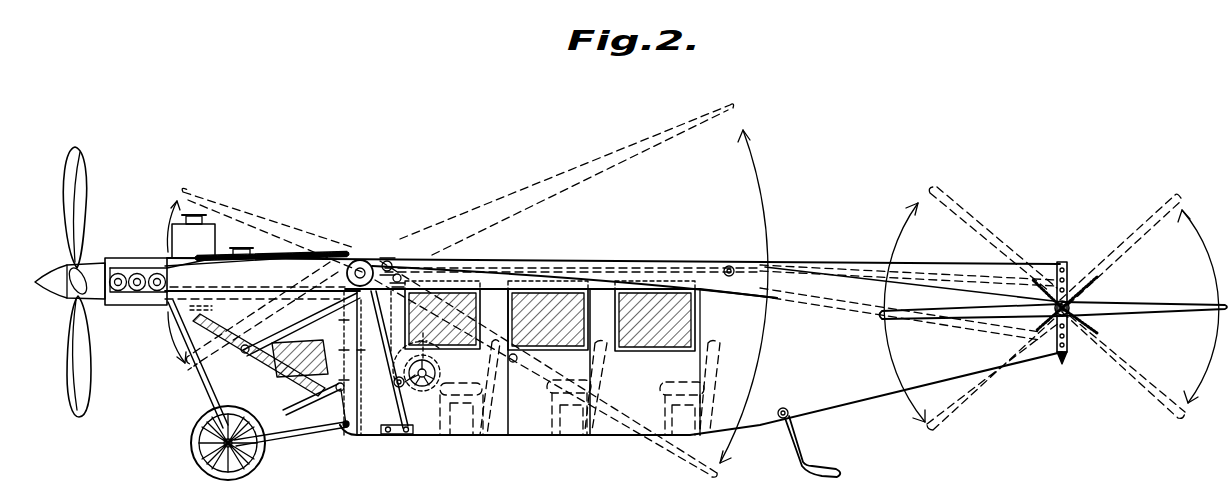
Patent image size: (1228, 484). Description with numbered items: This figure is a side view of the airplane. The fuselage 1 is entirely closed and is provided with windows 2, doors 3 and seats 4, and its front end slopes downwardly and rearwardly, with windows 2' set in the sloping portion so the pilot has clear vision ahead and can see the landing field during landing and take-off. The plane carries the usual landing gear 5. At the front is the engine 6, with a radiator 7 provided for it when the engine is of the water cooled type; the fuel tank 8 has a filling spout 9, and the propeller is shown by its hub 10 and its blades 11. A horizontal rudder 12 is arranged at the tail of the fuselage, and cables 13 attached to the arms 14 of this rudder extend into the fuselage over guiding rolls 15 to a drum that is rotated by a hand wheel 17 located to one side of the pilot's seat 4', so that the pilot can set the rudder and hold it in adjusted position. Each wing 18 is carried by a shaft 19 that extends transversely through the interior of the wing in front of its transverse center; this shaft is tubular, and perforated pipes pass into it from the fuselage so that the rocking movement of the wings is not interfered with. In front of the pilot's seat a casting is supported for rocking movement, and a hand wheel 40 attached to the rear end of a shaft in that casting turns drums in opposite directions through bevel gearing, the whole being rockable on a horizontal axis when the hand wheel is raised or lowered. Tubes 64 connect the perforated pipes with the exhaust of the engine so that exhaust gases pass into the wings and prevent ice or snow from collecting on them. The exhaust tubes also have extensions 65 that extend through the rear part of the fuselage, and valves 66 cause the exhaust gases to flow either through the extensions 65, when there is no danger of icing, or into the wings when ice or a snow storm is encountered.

The fuselage 1 is at (502, 423).
The windows 2 is at (550, 329).
The windows 2' is at (275, 370).
The doors 3 is at (545, 413).
The seats 4 is at (633, 388).
The pilot's seat 4' is at (470, 387).
The landing gear 5 is at (218, 399).
The engine 6 is at (143, 290).
The radiator 7 is at (180, 237).
The fuel tank 8 is at (313, 252).
The filling spout 9 is at (242, 248).
The propeller hub 10 is at (92, 268).
The propeller blades 11 is at (80, 328).
The horizontal rudder 12 is at (1147, 304).
The cables 13 is at (944, 265).
The arms 14 is at (1088, 250).
The guiding rolls 15 is at (398, 272).
The hand wheel 17 is at (406, 435).
The wing 18 is at (495, 272).
The shaft 19 is at (370, 258).
The hand wheel 40 is at (428, 341).
The tubes 64 is at (344, 252).
The extensions 65 is at (579, 266).
The valves 66 is at (390, 258).